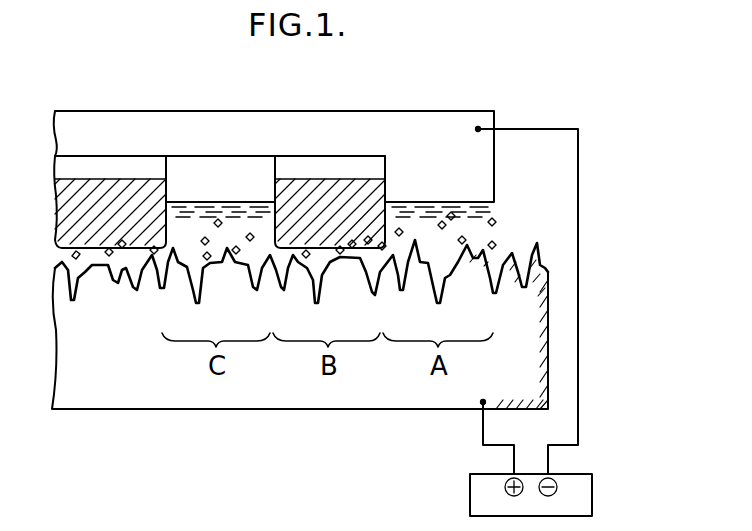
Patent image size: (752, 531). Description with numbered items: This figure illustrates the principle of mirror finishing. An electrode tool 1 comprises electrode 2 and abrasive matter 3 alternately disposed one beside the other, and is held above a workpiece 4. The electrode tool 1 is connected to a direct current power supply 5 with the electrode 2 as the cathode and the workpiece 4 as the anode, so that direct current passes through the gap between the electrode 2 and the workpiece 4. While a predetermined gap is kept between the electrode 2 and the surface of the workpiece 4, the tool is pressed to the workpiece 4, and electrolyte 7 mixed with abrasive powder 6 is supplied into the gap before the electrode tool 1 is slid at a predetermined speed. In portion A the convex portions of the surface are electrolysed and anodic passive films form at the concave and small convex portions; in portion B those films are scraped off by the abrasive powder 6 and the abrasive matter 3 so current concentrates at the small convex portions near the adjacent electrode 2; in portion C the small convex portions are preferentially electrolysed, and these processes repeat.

The electrode tool 1 is at (387, 137).
The electrode 2 is at (217, 177).
The abrasive matter 3 is at (108, 213).
The workpiece 4 is at (368, 392).
The direct current power supply 5 is at (484, 488).
The abrasive powder 6 is at (438, 217).
The electrolyte 7 is at (500, 209).